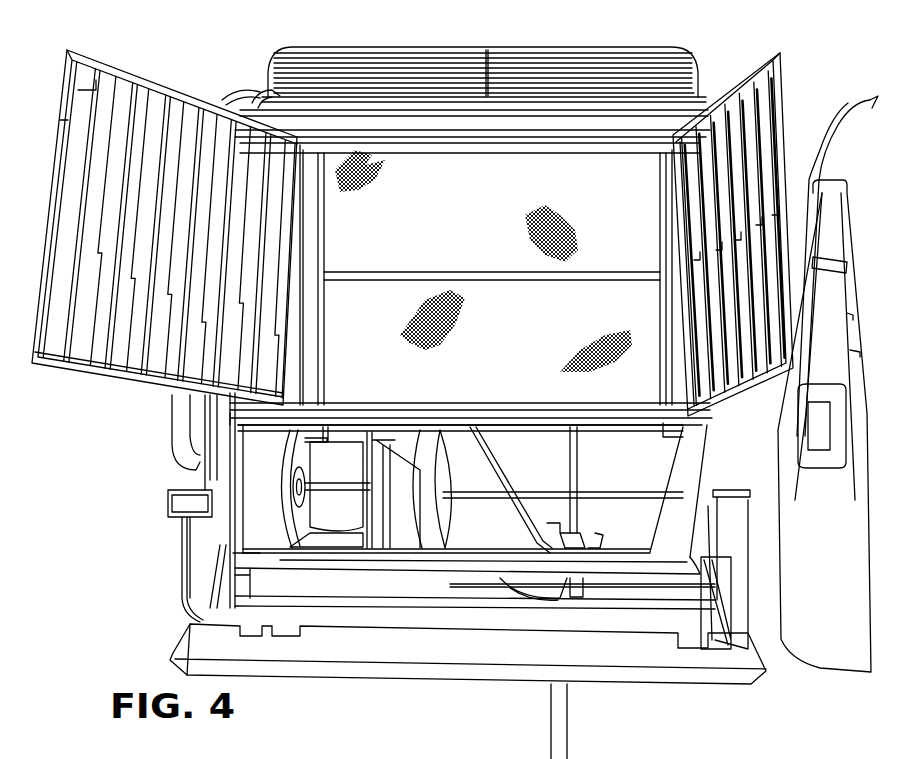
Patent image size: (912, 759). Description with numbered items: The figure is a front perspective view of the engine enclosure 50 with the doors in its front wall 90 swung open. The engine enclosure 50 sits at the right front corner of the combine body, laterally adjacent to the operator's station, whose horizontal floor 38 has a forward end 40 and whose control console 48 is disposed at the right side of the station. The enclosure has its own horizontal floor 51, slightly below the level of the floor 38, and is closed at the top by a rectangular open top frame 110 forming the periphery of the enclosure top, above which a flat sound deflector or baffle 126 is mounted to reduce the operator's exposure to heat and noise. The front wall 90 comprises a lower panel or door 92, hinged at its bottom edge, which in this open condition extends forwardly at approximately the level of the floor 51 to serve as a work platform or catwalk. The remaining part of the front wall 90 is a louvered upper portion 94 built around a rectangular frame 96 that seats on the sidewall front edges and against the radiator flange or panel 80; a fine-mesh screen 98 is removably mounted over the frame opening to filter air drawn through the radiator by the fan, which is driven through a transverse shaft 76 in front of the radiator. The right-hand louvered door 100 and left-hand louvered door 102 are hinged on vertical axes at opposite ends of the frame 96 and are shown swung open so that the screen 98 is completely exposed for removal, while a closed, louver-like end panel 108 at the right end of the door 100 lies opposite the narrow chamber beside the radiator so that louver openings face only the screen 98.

The sound deflector or baffle 126 is at (672, 50).
The rectangular frame 96 is at (458, 145).
The screen 98 is at (424, 193).
The top frame 110 is at (266, 94).
The front wall 90 is at (226, 91).
The right-hand louvered door 100 is at (75, 185).
The end panel 108 is at (275, 320).
The left-hand louvered door 102 is at (755, 140).
The louvered upper portion 94 is at (758, 230).
The control console 48 is at (826, 280).
The forward end of the floor 40 is at (845, 581).
The horizontal floor 38 is at (825, 500).
The horizontal floor of the engine enclosure 51 is at (462, 547).
The radiator flange or panel 80 is at (305, 455).
The transverse shaft 76 is at (337, 492).
The engine enclosure 50 is at (134, 480).
The lower panel or door 92 is at (425, 655).